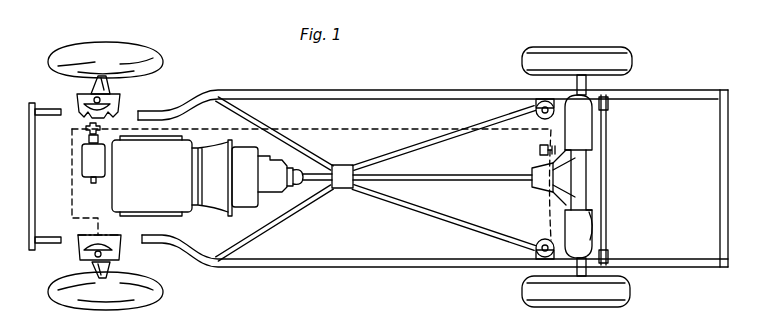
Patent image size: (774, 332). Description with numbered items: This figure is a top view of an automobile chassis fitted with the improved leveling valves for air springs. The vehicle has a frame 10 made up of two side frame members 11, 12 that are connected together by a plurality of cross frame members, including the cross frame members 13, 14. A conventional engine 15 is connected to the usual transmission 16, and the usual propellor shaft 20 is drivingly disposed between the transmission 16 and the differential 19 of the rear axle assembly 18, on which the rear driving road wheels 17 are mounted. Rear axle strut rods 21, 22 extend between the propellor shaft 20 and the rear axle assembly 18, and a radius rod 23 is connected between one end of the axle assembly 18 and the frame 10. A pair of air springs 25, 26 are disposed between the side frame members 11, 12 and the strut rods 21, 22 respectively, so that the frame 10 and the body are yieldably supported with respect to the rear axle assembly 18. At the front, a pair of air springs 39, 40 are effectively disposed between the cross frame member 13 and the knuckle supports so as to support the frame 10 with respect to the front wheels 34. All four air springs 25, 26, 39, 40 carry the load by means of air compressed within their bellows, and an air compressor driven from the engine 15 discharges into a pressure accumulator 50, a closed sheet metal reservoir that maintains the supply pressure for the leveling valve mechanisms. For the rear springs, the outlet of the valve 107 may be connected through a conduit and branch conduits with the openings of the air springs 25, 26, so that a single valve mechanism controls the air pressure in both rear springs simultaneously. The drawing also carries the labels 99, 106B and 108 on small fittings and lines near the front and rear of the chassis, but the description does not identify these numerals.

The frame 10 is at (406, 88).
The side frame member 11 is at (326, 262).
The side frame member 12 is at (328, 90).
The cross frame member 13 is at (118, 240).
The cross frame member 14 is at (592, 221).
The engine 15 is at (160, 189).
The transmission 16 is at (257, 176).
The rear driving road wheels 17 is at (612, 50).
The rear axle assembly 18 is at (616, 152).
The differential 19 is at (594, 187).
The propellor shaft 20 is at (498, 178).
The rear axle strut rod 21 is at (460, 210).
The rear axle strut rod 22 is at (456, 153).
The radius rod 23 is at (608, 130).
The air spring 25 is at (532, 258).
The air spring 26 is at (530, 100).
The front wheels 34 is at (62, 52).
The air spring 39 is at (80, 88).
The air spring 40 is at (80, 262).
The pressure accumulator 50 is at (82, 160).
The fitting 99 is at (86, 120).
The brake line fitting 106B is at (538, 150).
The valve 107 is at (72, 194).
The brake line 108 is at (340, 130).